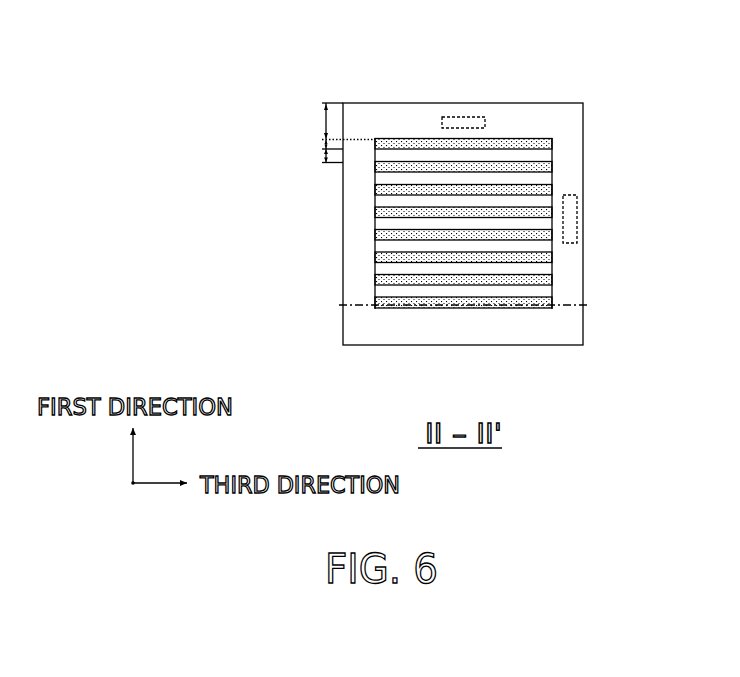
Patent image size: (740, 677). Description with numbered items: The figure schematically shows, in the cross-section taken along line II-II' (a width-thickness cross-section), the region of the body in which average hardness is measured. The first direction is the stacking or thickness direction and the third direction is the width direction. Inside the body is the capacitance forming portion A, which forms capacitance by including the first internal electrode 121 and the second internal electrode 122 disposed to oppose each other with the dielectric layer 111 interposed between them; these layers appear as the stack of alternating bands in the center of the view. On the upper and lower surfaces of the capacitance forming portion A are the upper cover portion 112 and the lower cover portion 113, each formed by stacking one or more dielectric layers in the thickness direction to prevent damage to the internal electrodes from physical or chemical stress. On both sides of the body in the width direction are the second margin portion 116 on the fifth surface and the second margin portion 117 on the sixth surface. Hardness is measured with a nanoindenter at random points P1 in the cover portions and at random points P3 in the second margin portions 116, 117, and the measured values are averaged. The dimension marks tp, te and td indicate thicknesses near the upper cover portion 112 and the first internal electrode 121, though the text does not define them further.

The upper cover portion 112 is at (507, 120).
The first internal electrode 121 is at (553, 139).
The dielectric layer 111 is at (553, 151).
The second internal electrode 122 is at (553, 164).
The second margin portion 116 is at (358, 260).
The second margin portion 117 is at (577, 247).
The lower cover portion 113 is at (578, 323).
The random points of the cover portions P1 is at (452, 117).
The random points of the second margin portions P3 is at (577, 200).
The capacitance forming portion A is at (365, 225).
The thickness tp is at (337, 121).
The thickness te is at (322, 148).
The thickness td is at (322, 162).